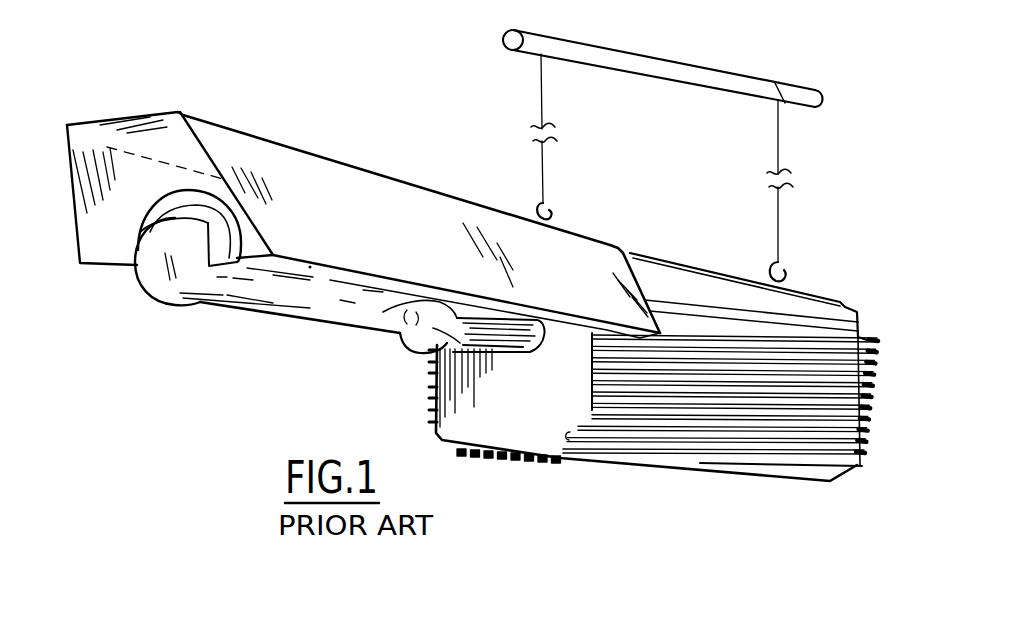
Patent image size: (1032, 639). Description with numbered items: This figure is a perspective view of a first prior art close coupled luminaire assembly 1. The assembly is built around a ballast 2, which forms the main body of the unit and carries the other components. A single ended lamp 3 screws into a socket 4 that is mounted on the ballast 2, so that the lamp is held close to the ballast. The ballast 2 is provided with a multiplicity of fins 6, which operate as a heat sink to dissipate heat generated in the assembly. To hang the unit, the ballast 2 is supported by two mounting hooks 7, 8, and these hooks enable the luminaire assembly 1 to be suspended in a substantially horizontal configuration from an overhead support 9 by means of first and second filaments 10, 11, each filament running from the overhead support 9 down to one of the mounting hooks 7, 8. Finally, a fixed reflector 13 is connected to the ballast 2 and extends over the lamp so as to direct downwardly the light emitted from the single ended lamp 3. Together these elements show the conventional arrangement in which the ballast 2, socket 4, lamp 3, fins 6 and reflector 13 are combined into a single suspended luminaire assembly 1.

The close coupled luminaire assembly 1 is at (264, 88).
The ballast 2 is at (645, 460).
The single ended lamp 3 is at (320, 307).
The socket 4 is at (430, 353).
The fins 6 is at (425, 404).
The mounting hook 7 is at (552, 210).
The mounting hook 8 is at (782, 268).
The overhead support 9 is at (662, 68).
The first filament 10 is at (541, 97).
The second filament 11 is at (779, 152).
The fixed reflector 13 is at (348, 192).